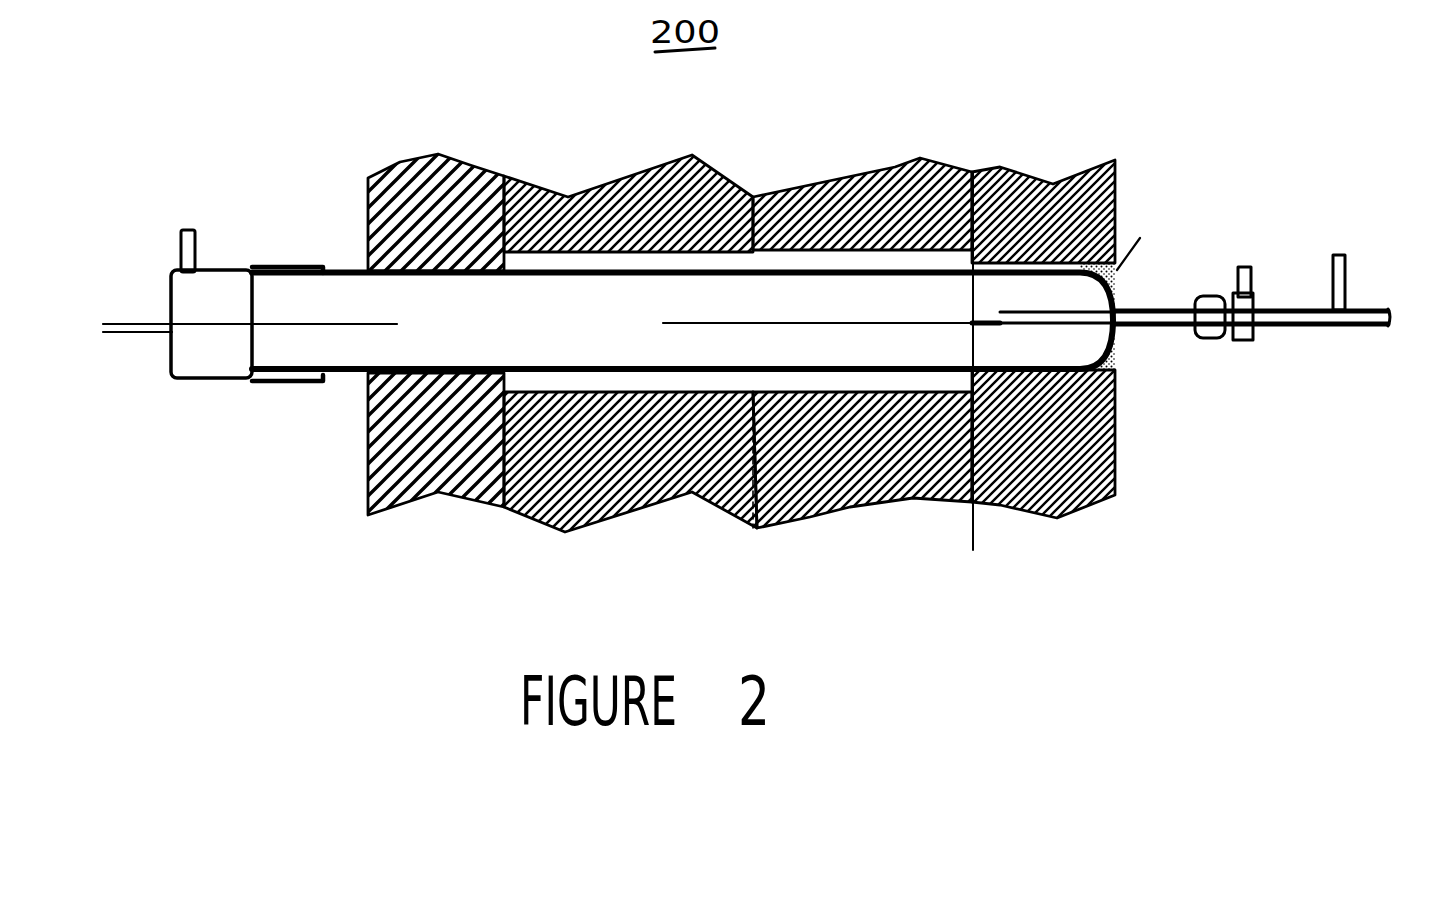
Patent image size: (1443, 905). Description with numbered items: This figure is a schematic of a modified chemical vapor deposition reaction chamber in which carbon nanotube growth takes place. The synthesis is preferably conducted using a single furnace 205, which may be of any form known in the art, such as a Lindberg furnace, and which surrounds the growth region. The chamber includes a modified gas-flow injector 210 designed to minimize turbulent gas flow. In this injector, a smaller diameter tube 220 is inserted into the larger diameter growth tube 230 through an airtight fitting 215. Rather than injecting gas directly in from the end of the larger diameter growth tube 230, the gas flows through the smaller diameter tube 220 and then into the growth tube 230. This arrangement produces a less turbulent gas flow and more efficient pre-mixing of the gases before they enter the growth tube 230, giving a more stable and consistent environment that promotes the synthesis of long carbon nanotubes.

The furnace 205 is at (818, 517).
The modified gas-flow injector 210 is at (1330, 327).
The airtight fitting 215 is at (1118, 320).
The smaller diameter tube 220 is at (987, 383).
The larger diameter growth tube 230 is at (765, 372).